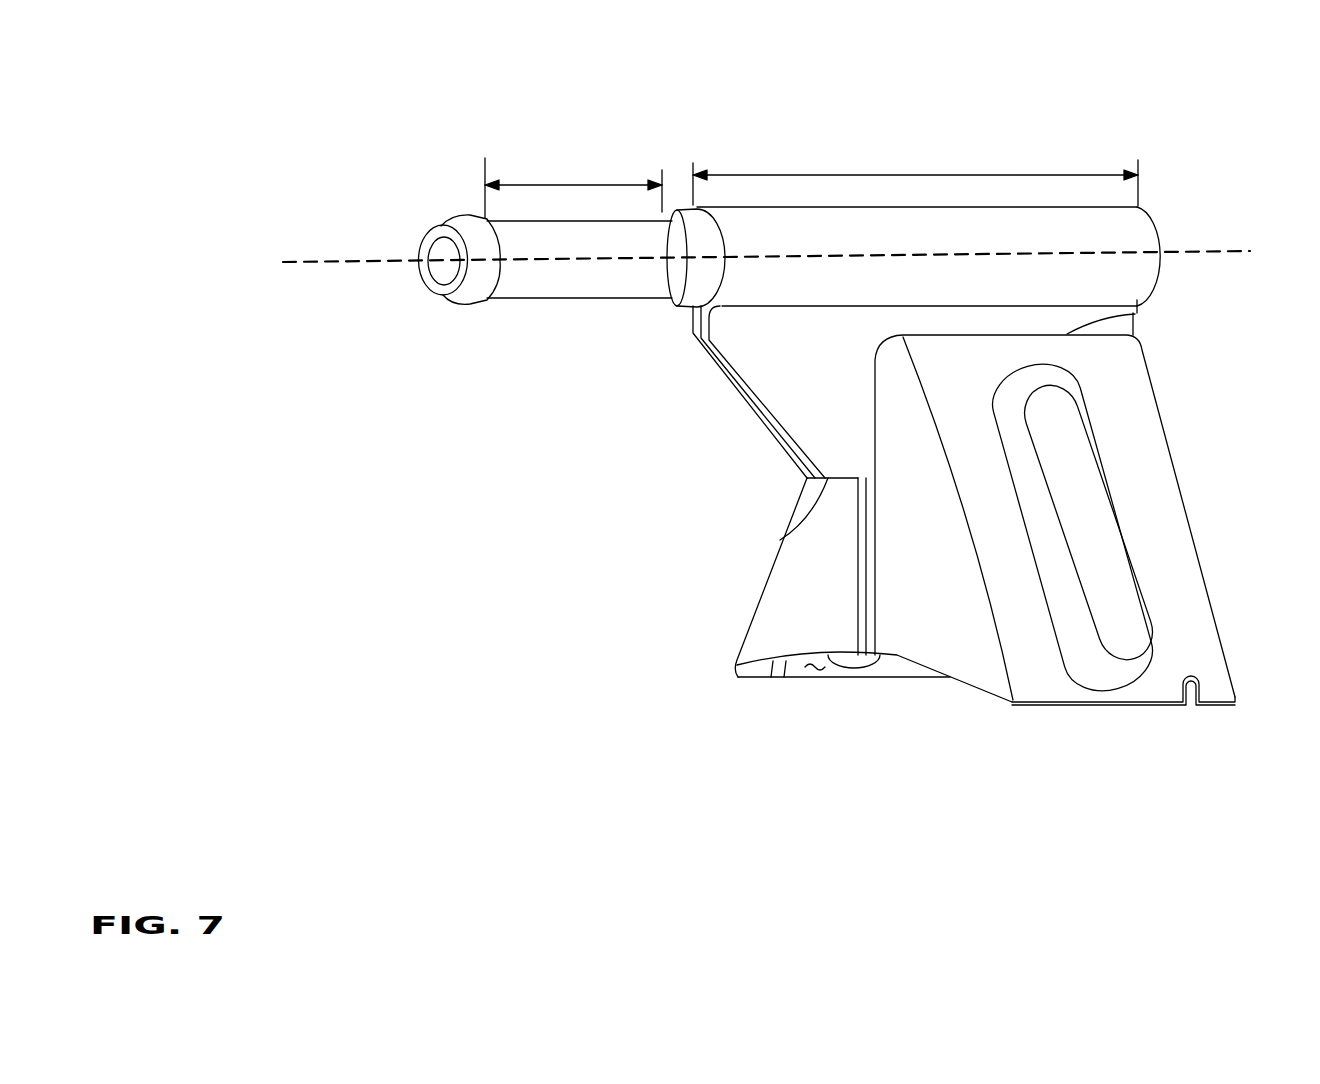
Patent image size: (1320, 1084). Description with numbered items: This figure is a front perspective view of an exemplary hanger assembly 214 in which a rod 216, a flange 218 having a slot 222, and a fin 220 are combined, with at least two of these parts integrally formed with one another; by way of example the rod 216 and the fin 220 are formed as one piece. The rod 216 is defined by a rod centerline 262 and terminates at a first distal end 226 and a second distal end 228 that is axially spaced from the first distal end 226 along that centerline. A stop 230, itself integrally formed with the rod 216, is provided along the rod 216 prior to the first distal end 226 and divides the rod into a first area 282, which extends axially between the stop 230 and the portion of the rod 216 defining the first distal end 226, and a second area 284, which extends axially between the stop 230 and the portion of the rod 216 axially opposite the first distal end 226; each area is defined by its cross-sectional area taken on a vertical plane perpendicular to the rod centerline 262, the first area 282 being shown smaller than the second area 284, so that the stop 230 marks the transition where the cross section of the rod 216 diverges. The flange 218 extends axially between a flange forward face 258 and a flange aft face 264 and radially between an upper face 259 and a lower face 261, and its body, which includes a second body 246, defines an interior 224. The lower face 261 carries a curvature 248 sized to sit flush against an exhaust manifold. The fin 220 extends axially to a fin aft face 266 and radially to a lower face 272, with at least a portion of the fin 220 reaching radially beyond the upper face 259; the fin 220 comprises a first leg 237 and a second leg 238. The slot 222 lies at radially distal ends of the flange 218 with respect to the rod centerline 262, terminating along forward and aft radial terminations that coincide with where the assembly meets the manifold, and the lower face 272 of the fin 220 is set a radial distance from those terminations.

The hanger assembly 214 is at (312, 90).
The rod 216 is at (512, 302).
The flange 218 is at (829, 618).
The fin 220 is at (733, 543).
The slot 222 is at (853, 607).
The interior 224 is at (815, 668).
The first distal end 226 is at (432, 293).
The second distal end 228 is at (1150, 213).
The stop 230 is at (677, 208).
The first leg 237 is at (738, 390).
The second leg 238 is at (715, 368).
The second body 246 is at (1083, 557).
The curvature 248 is at (767, 578).
The flange forward face 258 is at (703, 352).
The upper face 259 is at (1136, 313).
The lower face 261 is at (1157, 703).
The rod centerline 262 is at (1232, 250).
The flange aft face 264 is at (1215, 625).
The fin aft face 266 is at (1137, 308).
The lower face 272 is at (781, 540).
The first area 282 is at (555, 183).
The second area 284 is at (925, 172).